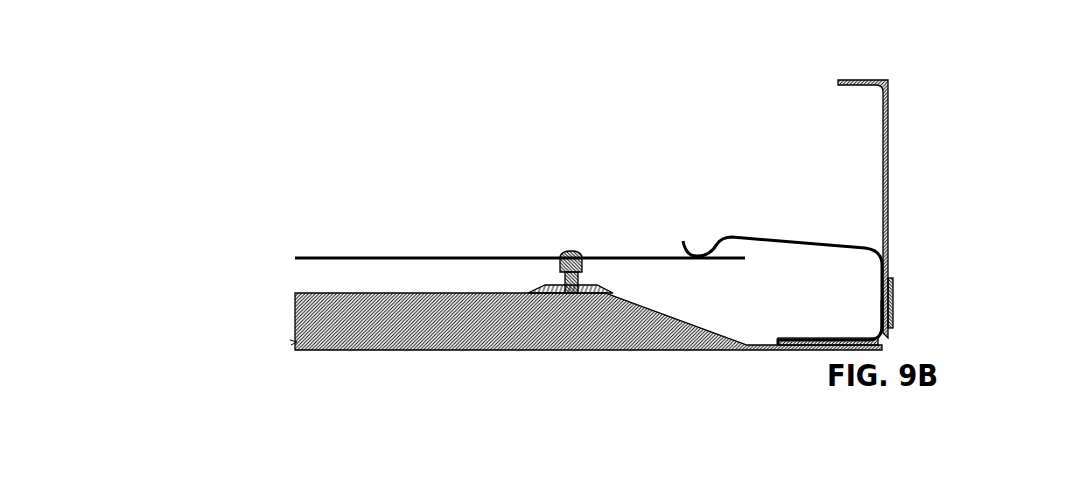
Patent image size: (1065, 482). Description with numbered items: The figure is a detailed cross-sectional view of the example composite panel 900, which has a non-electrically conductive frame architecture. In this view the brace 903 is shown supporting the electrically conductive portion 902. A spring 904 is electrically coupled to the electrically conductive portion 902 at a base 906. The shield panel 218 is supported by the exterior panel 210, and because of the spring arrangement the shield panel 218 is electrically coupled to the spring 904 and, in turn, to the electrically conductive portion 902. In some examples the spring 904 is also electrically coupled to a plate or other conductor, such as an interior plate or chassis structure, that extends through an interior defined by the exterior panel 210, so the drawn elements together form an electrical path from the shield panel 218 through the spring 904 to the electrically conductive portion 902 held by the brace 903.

The composite panel 900 is at (945, 60).
The brace 903 is at (888, 146).
The spring 904 is at (742, 240).
The base 906 is at (880, 317).
The electrically conductive portion 902 is at (893, 306).
The shield panel 218 is at (343, 257).
The exterior panel 210 is at (306, 317).